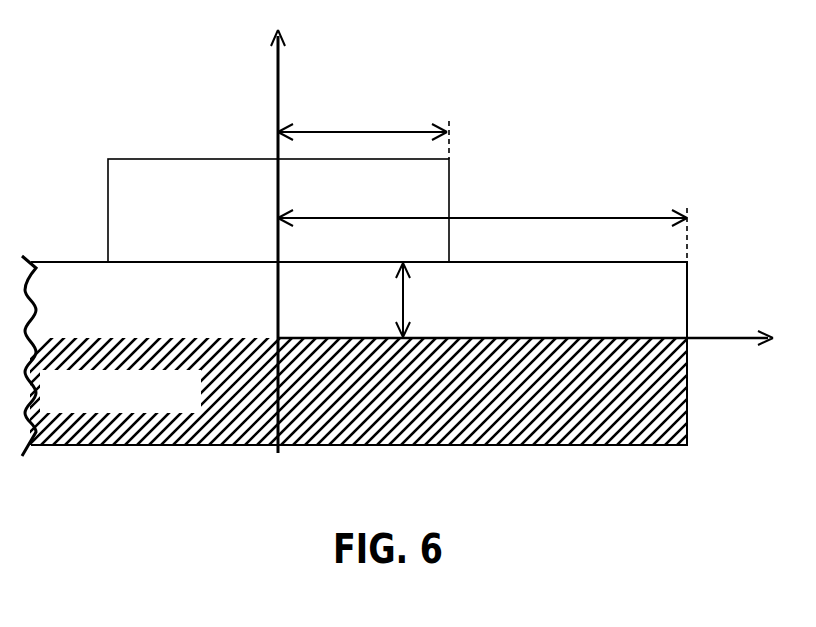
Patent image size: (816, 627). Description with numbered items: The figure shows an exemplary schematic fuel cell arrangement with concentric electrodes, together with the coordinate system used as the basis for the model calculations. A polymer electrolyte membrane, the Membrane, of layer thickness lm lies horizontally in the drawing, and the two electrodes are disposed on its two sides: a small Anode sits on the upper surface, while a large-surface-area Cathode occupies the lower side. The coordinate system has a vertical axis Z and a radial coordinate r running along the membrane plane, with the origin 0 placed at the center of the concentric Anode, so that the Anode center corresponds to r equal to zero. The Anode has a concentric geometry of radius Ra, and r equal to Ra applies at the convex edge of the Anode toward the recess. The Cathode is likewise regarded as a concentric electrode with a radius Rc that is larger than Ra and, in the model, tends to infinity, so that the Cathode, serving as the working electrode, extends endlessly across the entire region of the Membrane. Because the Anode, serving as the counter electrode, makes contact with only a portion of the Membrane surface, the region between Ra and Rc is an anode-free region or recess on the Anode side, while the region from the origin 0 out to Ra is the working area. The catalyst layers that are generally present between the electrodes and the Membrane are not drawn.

The anode radius Ra is at (363, 123).
The cathode radius Rc is at (482, 216).
The membrane layer thickness lm is at (425, 300).
The z axis Z is at (263, 241).
The radial coordinate r is at (525, 359).
The origin 0 is at (253, 315).
The anode Anode is at (278, 210).
The polymer electrolyte membrane Membrane is at (354, 356).
The cathode Cathode is at (402, 390).